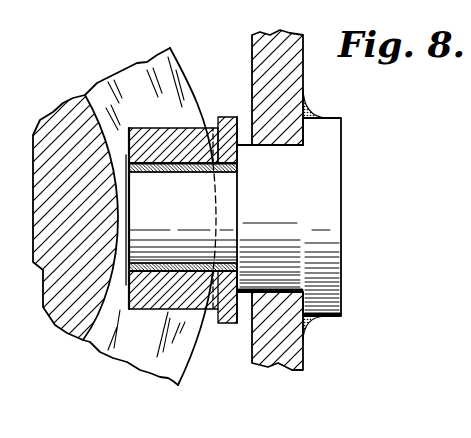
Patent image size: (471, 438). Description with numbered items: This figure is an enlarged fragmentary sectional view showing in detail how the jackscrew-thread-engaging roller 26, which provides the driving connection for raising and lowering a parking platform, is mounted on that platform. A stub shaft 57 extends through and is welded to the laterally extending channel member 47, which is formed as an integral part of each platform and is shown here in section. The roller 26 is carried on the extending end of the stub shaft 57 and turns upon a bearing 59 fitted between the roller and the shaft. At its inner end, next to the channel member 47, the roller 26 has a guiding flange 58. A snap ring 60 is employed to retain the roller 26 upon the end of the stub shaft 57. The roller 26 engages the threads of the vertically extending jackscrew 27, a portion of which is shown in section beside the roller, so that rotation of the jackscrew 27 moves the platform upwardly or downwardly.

The jackscrew 27 is at (128, 79).
The roller 26 is at (163, 140).
The guiding flange 58 is at (227, 118).
The bearing 59 is at (213, 168).
The snap ring 60 is at (130, 207).
The stub shaft 57 is at (283, 208).
The channel member 47 is at (283, 341).